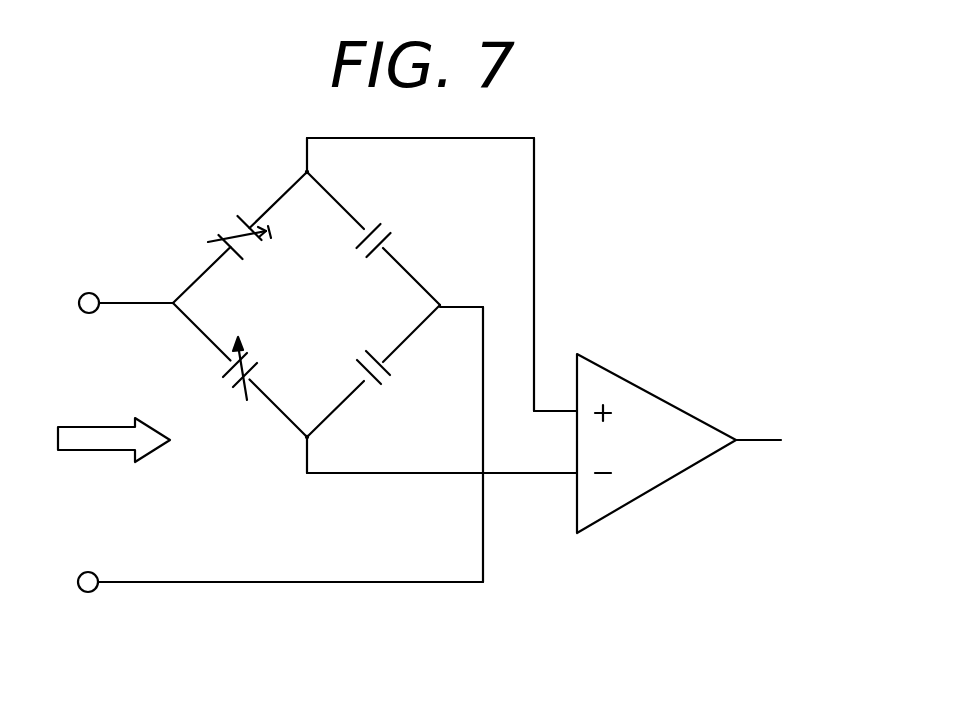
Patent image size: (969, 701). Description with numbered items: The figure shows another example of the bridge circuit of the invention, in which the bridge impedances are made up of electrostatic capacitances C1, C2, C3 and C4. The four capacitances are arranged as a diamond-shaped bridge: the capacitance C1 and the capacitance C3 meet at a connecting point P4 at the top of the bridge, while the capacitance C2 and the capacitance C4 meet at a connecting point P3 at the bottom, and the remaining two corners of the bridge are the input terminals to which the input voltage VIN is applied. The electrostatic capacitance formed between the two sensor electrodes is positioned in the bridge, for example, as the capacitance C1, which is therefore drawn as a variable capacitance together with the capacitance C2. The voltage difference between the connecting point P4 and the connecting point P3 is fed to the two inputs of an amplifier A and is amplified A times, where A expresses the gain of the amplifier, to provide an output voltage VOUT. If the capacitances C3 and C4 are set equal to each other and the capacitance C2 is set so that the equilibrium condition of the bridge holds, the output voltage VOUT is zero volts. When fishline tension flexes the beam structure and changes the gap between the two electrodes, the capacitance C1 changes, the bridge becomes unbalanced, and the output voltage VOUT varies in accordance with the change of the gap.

The electrostatic capacitance C1 is at (233, 226).
The electrostatic capacitance C2 is at (224, 374).
The electrostatic capacitance C3 is at (388, 225).
The electrostatic capacitance C4 is at (391, 381).
The connecting point P3 is at (306, 409).
The connecting point P4 is at (310, 200).
The gain of amplifier A is at (656, 443).
The input voltage VIN is at (91, 440).
The output voltage VOUT is at (793, 446).